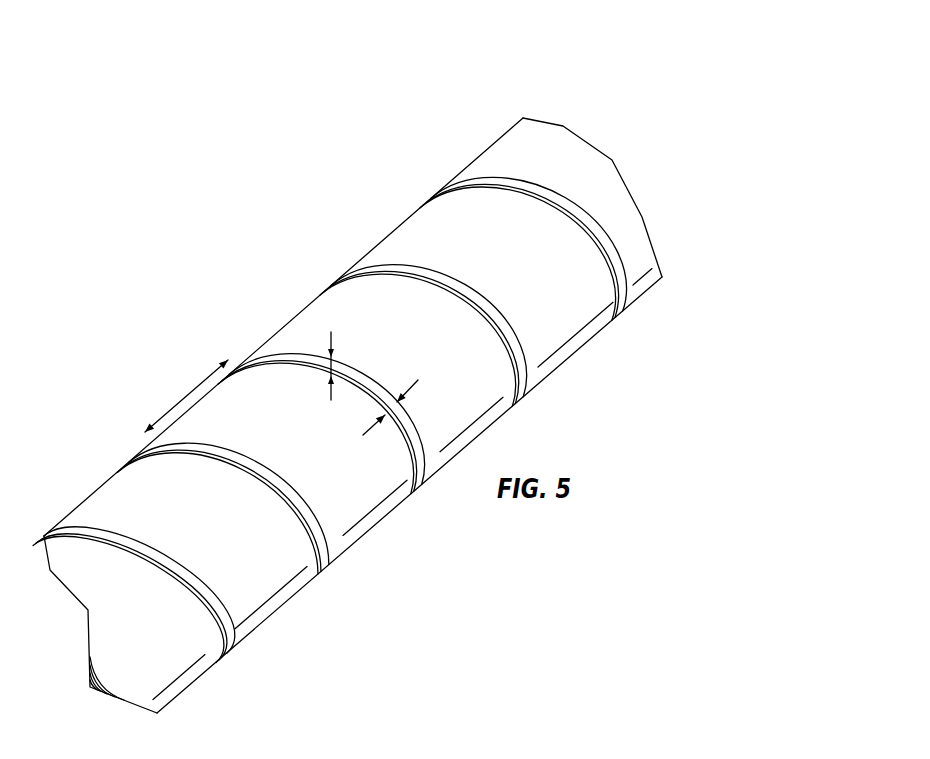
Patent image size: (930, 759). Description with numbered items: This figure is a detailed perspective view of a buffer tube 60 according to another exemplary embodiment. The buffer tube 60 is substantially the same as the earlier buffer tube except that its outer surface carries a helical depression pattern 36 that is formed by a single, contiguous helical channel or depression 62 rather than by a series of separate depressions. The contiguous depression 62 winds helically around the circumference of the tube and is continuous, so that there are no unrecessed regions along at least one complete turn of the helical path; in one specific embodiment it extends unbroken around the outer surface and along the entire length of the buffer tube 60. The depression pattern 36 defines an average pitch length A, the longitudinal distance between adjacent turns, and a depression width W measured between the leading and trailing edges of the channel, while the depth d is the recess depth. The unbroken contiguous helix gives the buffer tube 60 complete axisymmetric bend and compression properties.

The buffer tube 60 is at (347, 372).
The helical depression pattern 36 is at (318, 220).
The contiguous helical depression 62 is at (484, 181).